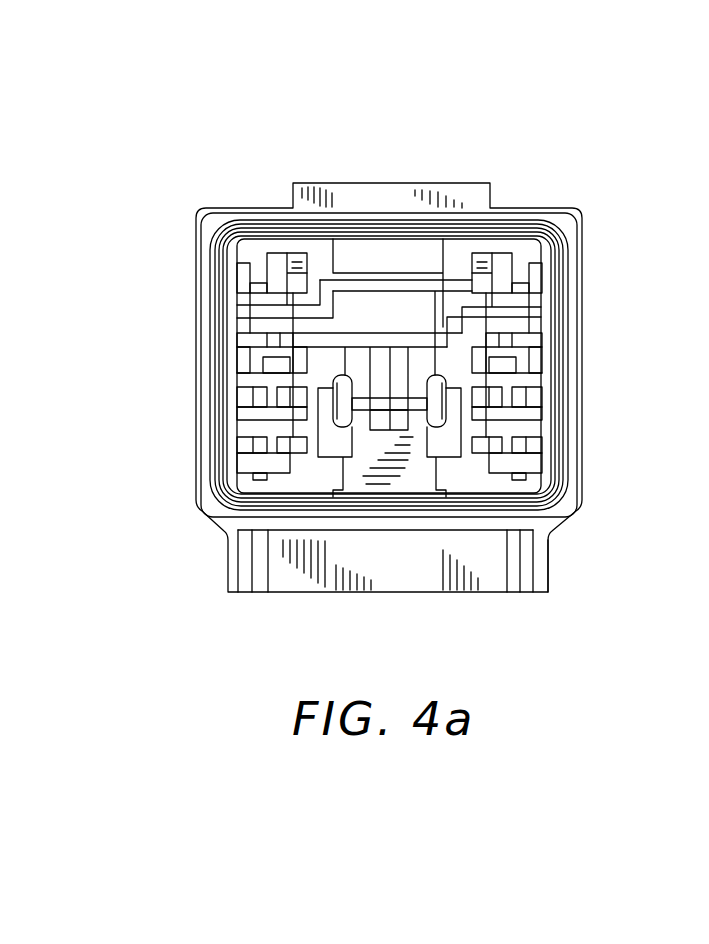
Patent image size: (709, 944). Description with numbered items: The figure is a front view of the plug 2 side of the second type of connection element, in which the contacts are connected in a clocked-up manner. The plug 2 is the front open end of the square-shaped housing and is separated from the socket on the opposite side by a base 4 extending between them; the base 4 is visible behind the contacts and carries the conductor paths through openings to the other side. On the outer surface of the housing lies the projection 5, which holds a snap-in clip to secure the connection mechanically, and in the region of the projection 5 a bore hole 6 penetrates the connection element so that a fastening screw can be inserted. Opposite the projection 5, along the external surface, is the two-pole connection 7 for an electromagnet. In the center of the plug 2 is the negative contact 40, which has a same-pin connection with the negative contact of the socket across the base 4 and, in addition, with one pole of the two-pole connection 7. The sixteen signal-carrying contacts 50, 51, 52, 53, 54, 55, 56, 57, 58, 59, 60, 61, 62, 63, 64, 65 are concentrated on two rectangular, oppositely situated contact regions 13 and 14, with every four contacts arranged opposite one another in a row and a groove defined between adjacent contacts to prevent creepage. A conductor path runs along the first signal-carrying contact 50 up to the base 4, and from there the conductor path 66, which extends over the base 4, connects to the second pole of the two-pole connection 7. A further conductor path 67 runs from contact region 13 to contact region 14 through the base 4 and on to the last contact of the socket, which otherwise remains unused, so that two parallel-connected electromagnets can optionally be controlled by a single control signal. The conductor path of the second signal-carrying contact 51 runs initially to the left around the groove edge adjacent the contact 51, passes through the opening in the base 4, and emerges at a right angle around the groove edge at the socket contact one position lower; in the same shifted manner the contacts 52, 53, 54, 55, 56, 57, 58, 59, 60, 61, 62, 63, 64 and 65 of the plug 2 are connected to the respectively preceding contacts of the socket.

The plug 2 is at (436, 216).
The base 4 is at (322, 490).
The projection 5 is at (296, 108).
The bore hole 6 is at (392, 108).
The two-pole connection 7 is at (480, 538).
The contact region 13 is at (240, 545).
The contact region 14 is at (557, 513).
The negative contact 40 is at (336, 425).
The first signal-carrying contact 50 is at (283, 342).
The second signal-carrying contact 51 is at (285, 452).
The signal-carrying contact 52 is at (260, 483).
The signal-carrying contact 53 is at (283, 440).
The signal-carrying contact 54 is at (273, 398).
The signal-carrying contact 55 is at (283, 322).
The signal-carrying contact 56 is at (250, 288).
The signal-carrying contact 57 is at (283, 283).
The signal-carrying contact 58 is at (503, 290).
The signal-carrying contact 59 is at (522, 288).
The signal-carrying contact 60 is at (525, 338).
The signal-carrying contact 61 is at (520, 397).
The signal-carrying contact 62 is at (540, 441).
The signal-carrying contact 63 is at (523, 478).
The signal-carrying contact 64 is at (500, 372).
The signal-carrying contact 65 is at (500, 340).
The conductor path 66 is at (380, 347).
The conductor path 67 is at (408, 287).